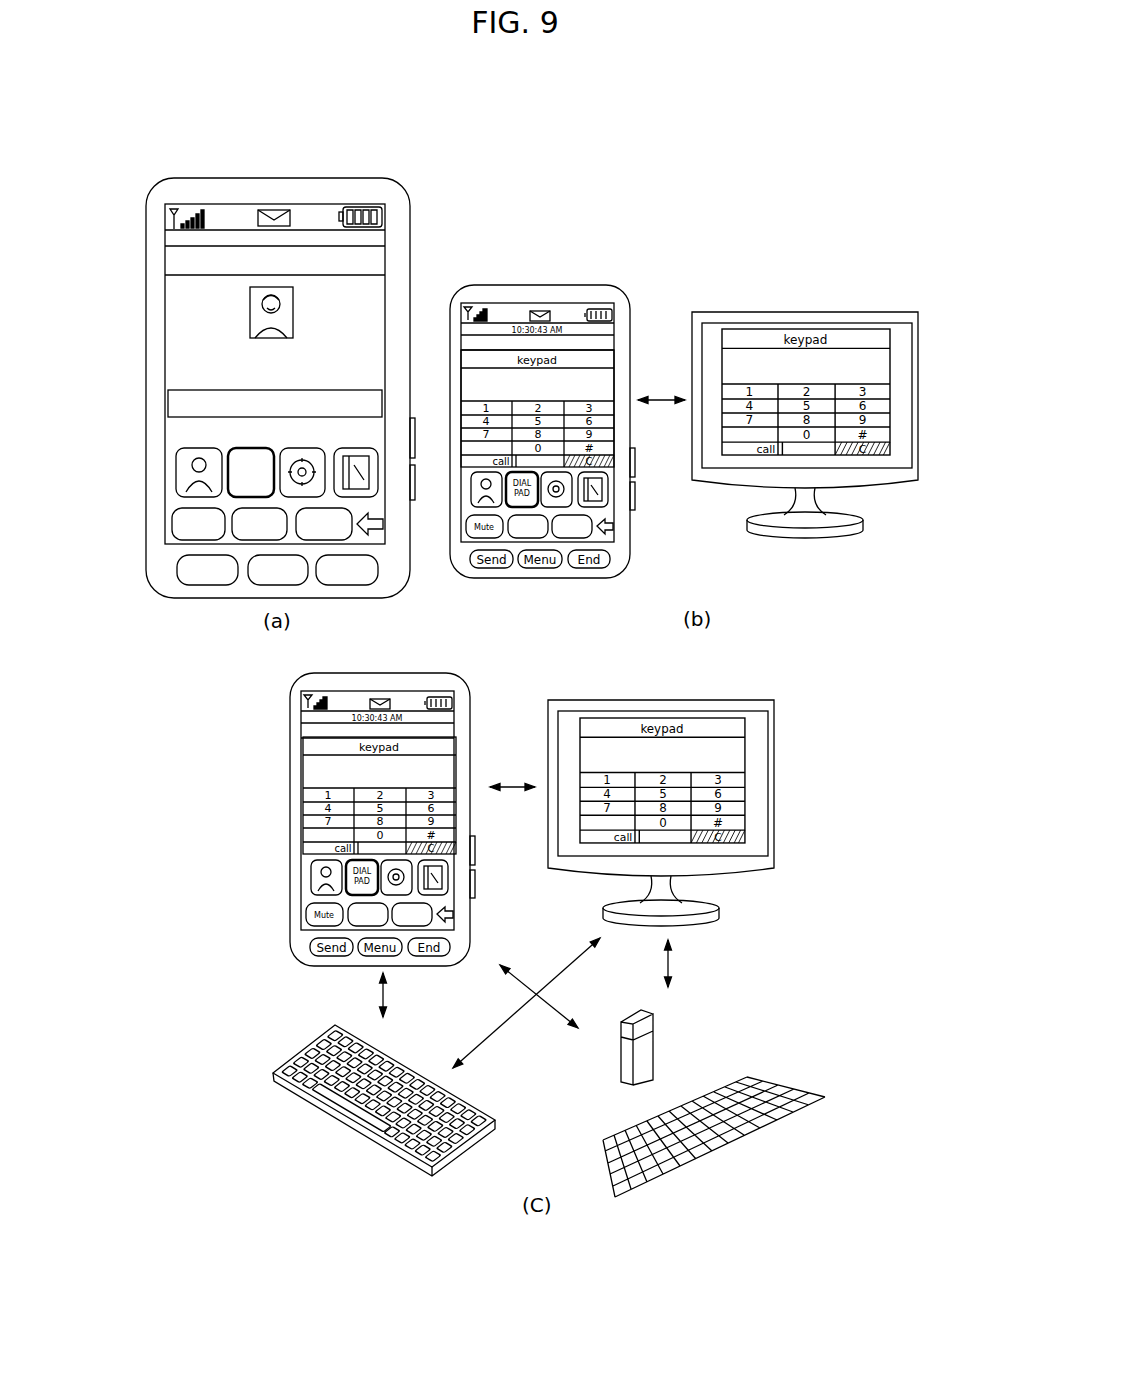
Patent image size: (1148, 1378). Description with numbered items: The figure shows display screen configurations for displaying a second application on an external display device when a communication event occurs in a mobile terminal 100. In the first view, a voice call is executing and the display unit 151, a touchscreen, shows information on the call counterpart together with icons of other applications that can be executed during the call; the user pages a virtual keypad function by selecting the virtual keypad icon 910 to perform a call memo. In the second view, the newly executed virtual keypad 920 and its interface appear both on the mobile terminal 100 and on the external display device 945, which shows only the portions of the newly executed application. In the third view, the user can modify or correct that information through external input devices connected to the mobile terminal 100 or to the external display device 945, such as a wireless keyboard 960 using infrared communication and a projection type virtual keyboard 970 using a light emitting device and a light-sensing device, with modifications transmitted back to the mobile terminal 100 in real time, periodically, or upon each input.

The mobile terminal 100 is at (390, 540).
The display unit 151 is at (275, 378).
The virtual keypad icon 910 is at (248, 494).
The virtual keypad 920 is at (573, 350).
The external display device 945 is at (784, 312).
The wireless keyboard 960 is at (296, 1046).
The projection type virtual keyboard 970 is at (653, 1038).